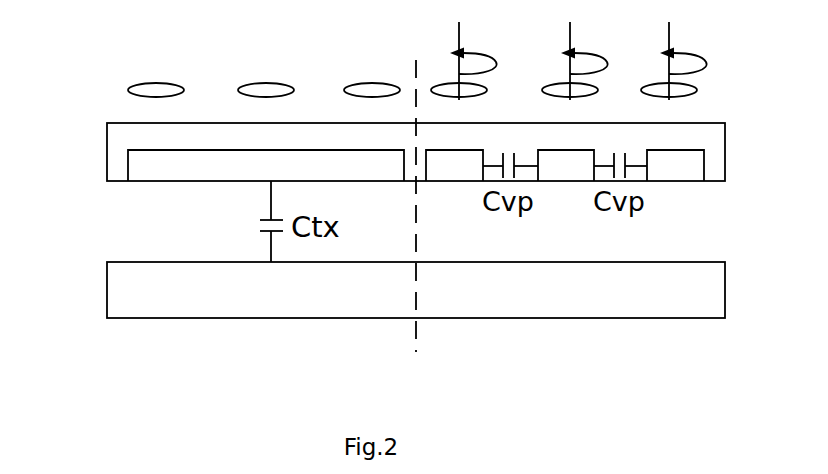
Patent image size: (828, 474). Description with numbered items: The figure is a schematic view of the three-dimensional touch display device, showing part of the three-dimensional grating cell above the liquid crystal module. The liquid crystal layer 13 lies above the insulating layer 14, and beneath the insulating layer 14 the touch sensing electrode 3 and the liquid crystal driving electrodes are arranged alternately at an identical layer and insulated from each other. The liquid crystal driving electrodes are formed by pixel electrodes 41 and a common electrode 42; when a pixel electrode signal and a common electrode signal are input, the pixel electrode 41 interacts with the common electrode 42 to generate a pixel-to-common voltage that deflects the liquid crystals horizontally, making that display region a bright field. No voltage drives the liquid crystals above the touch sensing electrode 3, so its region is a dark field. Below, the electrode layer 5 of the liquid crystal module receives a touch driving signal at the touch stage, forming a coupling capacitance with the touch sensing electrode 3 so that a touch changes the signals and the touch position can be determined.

The liquid crystal layer 13 is at (152, 89).
The insulating layer 14 is at (107, 153).
The touch sensing electrode 3 is at (173, 181).
The pixel electrode 41 is at (453, 181).
The common electrode 42 is at (567, 181).
The electrode layer 5 is at (195, 318).